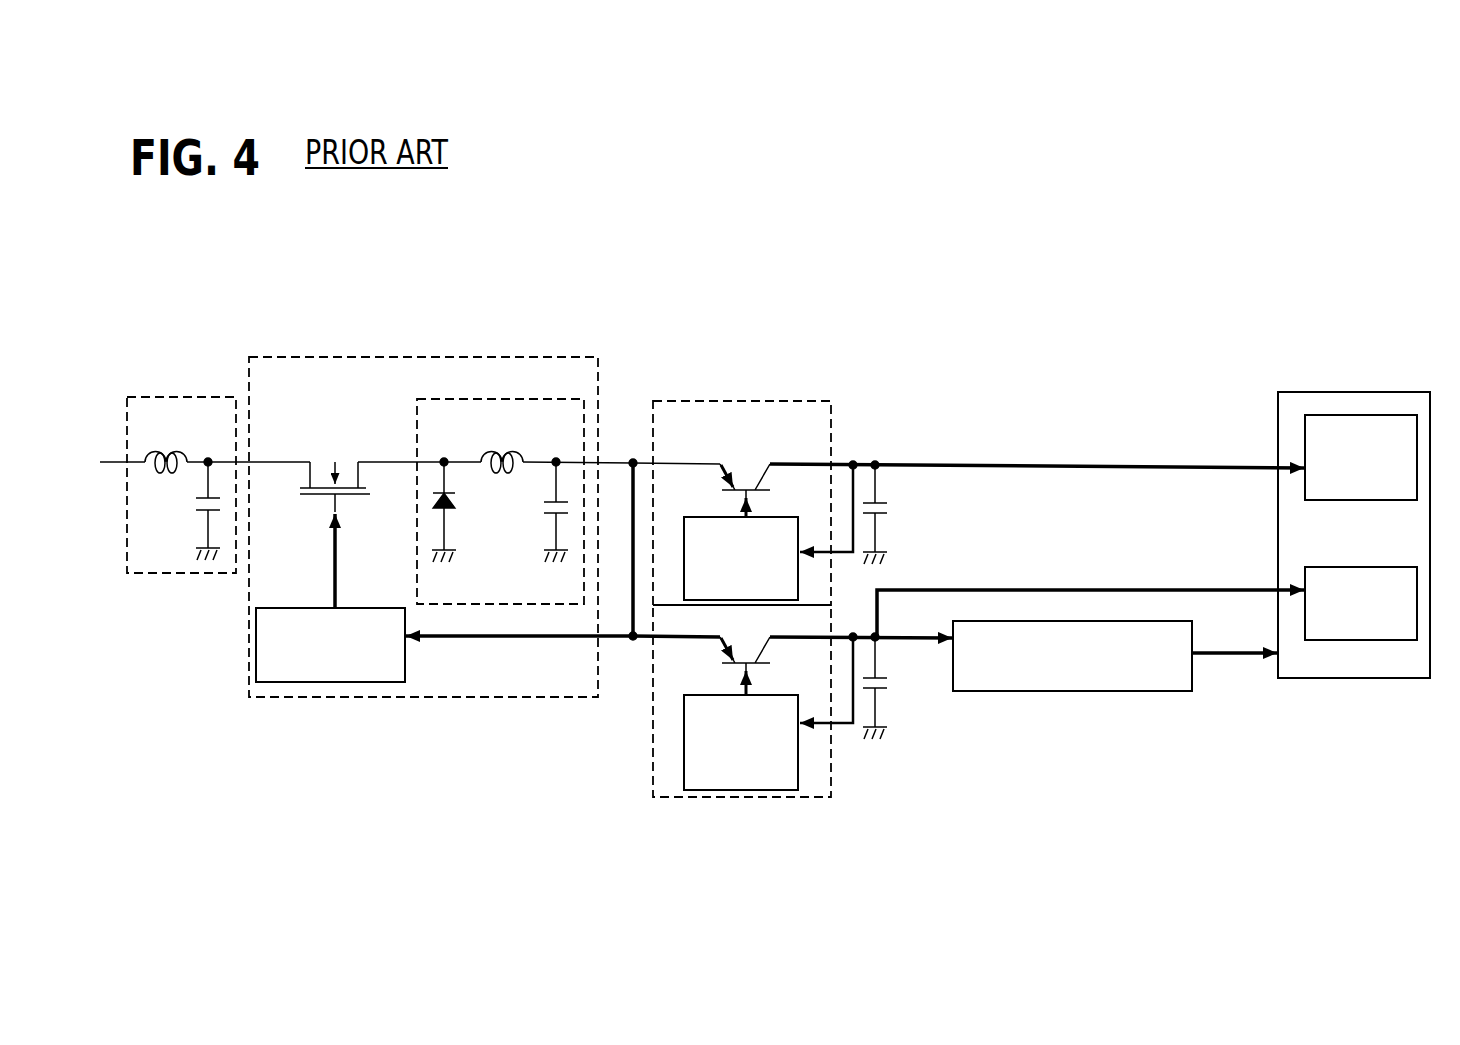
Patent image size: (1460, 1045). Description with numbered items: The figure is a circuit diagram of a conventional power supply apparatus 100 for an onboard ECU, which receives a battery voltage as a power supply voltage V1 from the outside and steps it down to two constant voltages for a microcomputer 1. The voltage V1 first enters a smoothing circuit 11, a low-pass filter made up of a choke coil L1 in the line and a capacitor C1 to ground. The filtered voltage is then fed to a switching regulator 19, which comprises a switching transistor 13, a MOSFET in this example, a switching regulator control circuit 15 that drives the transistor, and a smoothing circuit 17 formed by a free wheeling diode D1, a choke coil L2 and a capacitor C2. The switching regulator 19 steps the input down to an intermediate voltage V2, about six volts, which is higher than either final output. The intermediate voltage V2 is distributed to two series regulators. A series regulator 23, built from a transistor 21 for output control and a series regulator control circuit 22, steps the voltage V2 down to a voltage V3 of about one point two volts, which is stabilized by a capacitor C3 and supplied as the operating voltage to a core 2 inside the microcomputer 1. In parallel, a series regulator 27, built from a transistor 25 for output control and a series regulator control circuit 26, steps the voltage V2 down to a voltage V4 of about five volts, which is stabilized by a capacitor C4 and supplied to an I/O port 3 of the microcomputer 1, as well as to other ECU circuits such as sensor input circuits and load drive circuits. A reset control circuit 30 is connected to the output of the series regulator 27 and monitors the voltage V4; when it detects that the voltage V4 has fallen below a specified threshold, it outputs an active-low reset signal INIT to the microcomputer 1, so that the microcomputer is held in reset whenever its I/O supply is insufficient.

The microcomputer 1 is at (1375, 392).
The core 2 is at (1375, 500).
The I/O port 3 is at (1375, 567).
The smoothing circuit 11 is at (173, 397).
The switching transistor 13 is at (334, 460).
The switching regulator control circuit 15 is at (350, 609).
The smoothing circuit 17 is at (520, 399).
The switching regulator 19 is at (320, 357).
The transistor 21 is at (748, 470).
The series regulator control circuit 22 is at (780, 517).
The series regulator 23 is at (771, 401).
The transistor 25 is at (748, 648).
The series regulator control circuit 26 is at (772, 695).
The series regulator 27 is at (675, 797).
The reset control circuit 30 is at (1192, 677).
The power supply apparatus 100 is at (1082, 388).
The choke coil L1 is at (167, 450).
The capacitor C1 is at (200, 512).
The choke coil L2 is at (497, 454).
The free wheeling diode D1 is at (447, 500).
The capacitor C2 is at (547, 513).
The capacitor C3 is at (883, 505).
The capacitor C4 is at (883, 680).
The power supply voltage V1 is at (118, 444).
The intermediate voltage V2 is at (563, 534).
The voltage V3 is at (1037, 450).
The voltage V4 is at (1090, 598).
The reset signal INIT is at (1234, 637).